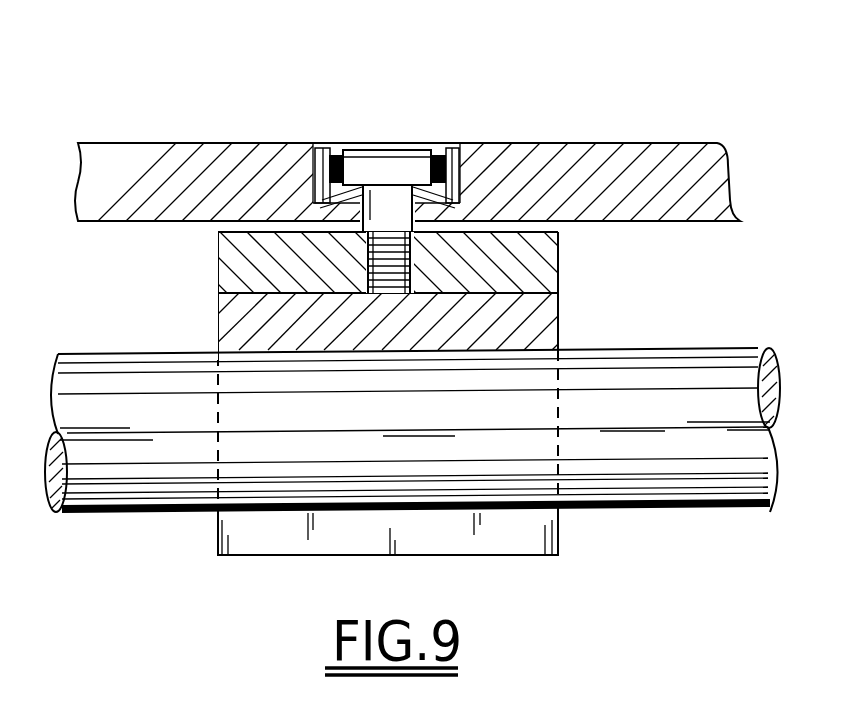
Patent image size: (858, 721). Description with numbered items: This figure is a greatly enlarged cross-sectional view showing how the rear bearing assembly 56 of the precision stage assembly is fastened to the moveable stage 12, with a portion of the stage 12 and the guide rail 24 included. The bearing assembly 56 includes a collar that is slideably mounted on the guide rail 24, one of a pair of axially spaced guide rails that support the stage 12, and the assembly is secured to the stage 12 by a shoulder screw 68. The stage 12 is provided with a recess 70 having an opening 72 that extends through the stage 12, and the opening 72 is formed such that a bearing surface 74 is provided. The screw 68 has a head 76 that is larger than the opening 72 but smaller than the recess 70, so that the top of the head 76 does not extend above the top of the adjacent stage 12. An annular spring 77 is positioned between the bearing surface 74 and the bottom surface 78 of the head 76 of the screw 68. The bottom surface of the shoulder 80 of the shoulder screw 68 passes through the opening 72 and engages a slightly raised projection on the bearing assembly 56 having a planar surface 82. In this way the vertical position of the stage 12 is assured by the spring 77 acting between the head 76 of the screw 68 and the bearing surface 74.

The moveable stage 12 is at (614, 155).
The guide rail 24 is at (777, 465).
The rear bearing assembly 56 is at (206, 296).
The shoulder screw 68 is at (411, 135).
The recess 70 is at (340, 150).
The opening 72 is at (429, 150).
The bearing surface 74 is at (366, 168).
The head 76 is at (420, 150).
The annular spring 77 is at (365, 249).
The bottom surface 78 is at (334, 150).
The shoulder 80 is at (322, 210).
The planar surface 82 is at (435, 150).